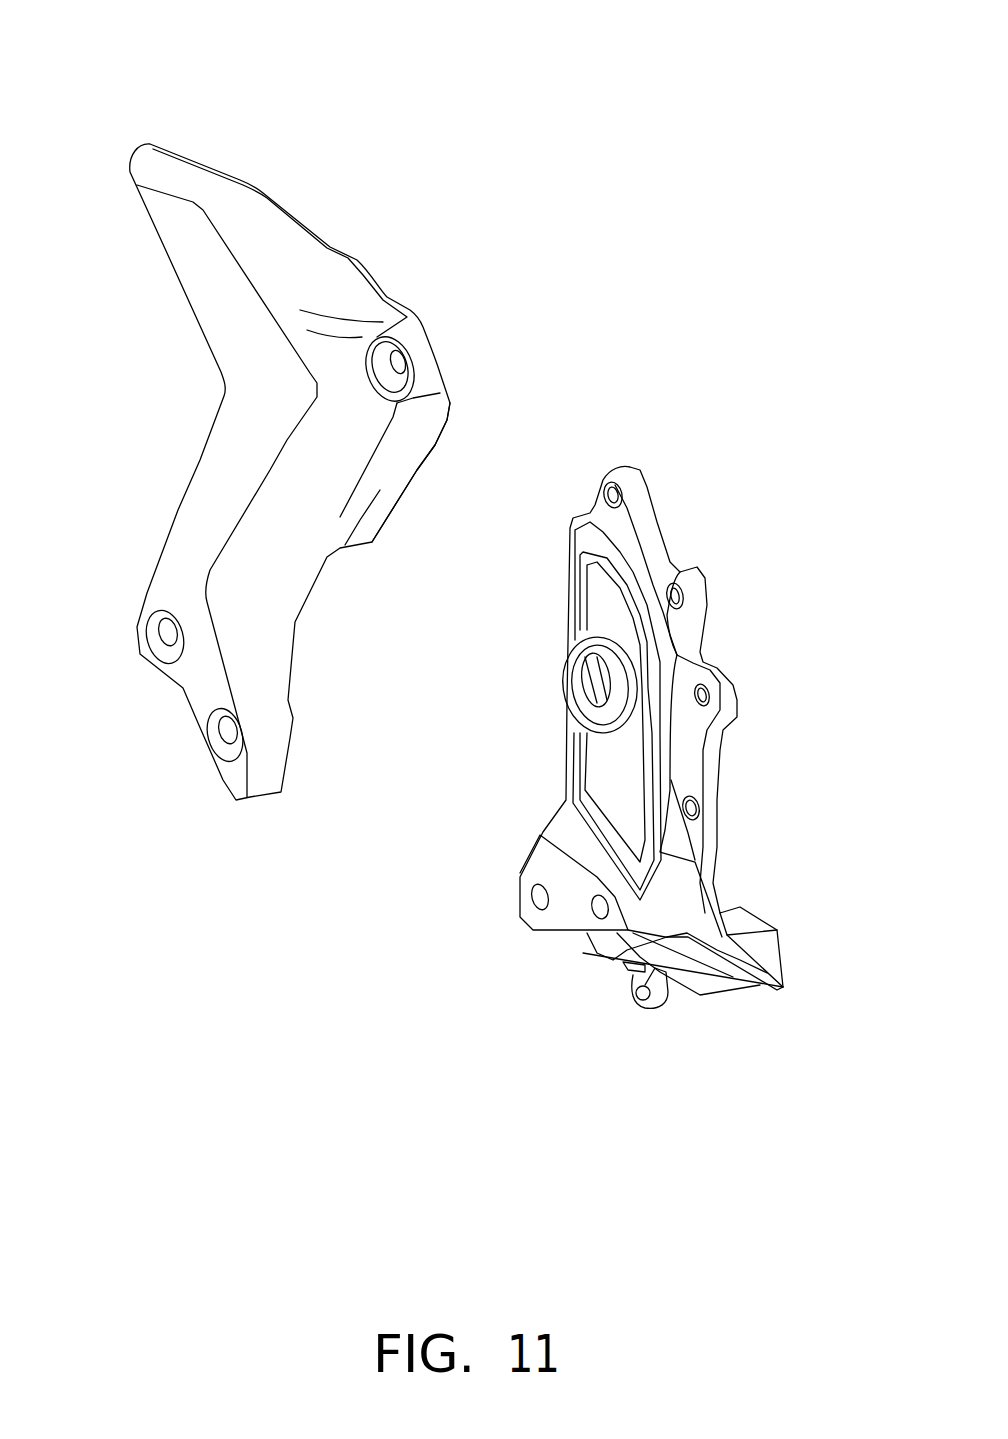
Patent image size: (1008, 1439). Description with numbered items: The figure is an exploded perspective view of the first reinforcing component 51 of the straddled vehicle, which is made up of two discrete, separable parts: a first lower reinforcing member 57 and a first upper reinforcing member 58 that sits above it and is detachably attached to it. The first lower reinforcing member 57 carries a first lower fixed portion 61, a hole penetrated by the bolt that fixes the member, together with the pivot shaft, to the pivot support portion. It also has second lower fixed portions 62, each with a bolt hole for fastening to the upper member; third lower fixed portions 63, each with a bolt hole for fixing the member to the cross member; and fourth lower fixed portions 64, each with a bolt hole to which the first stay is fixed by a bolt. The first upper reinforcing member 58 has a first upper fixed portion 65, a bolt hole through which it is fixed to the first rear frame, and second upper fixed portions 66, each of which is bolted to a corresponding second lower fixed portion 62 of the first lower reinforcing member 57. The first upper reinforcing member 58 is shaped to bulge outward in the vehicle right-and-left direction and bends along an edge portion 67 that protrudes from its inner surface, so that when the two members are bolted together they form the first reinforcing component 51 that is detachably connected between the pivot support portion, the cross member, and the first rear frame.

The first reinforcing component 51 is at (574, 124).
The first lower reinforcing member 57 is at (536, 773).
The first upper reinforcing member 58 is at (191, 453).
The first lower fixed portion 61 is at (596, 680).
The second lower fixed portions 62 is at (677, 583).
The third lower fixed portions 63 is at (687, 947).
The fourth lower fixed portions 64 is at (705, 808).
The first upper fixed portion 65 is at (393, 370).
The second upper fixed portions 66 is at (230, 737).
The edge portion 67 is at (403, 485).